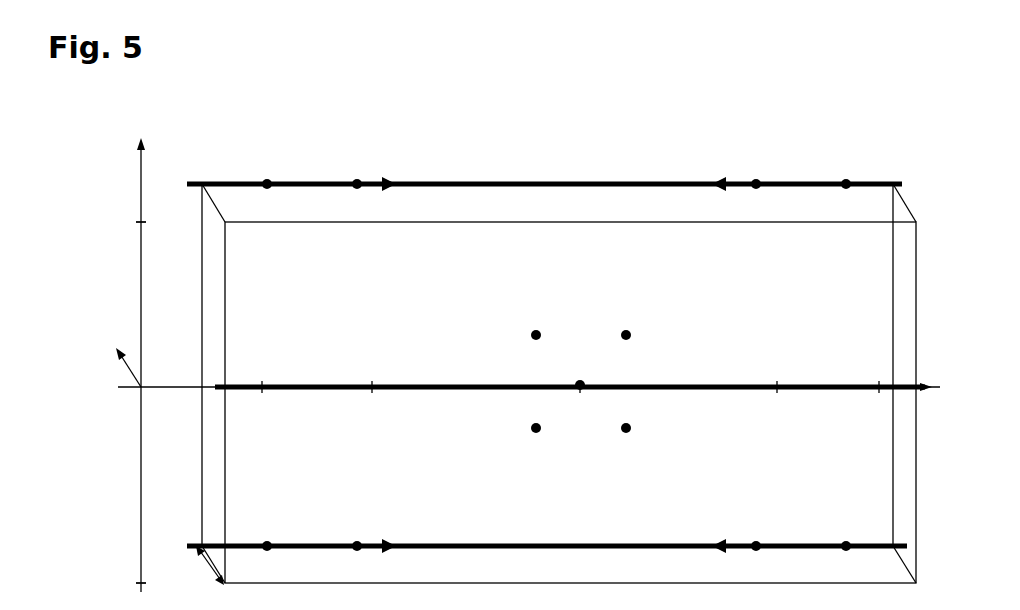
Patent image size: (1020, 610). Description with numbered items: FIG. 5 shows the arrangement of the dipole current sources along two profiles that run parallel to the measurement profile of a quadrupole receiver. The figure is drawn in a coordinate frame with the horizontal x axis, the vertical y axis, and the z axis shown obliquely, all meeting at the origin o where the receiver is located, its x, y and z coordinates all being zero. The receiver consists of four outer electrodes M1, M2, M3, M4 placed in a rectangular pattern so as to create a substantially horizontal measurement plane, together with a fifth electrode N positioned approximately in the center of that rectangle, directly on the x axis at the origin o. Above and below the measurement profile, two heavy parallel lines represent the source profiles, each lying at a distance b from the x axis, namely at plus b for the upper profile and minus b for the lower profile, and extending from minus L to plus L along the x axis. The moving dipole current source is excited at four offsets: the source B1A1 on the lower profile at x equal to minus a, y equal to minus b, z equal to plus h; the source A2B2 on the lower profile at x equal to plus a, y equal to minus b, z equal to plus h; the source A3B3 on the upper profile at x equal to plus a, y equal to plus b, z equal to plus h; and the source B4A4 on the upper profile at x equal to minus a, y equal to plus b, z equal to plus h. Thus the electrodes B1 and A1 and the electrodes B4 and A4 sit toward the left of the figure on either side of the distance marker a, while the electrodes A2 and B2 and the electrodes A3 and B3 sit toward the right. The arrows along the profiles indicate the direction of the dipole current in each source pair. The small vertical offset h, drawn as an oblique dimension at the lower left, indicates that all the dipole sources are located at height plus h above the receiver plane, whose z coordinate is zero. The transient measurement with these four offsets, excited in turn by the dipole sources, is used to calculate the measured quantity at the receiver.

The electrode A1 of dipole source B1A1 A1 is at (355, 557).
The electrode A2 of dipole source A2B2 A2 is at (758, 557).
The electrode A3 of dipole source A3B3 A3 is at (758, 195).
The electrode A4 of dipole source B4A4 A4 is at (355, 195).
The electrode B1 of dipole source B1A1 B1 is at (265, 557).
The electrode B2 of dipole source A2B2 B2 is at (852, 557).
The electrode B3 of dipole source A3B3 B3 is at (852, 195).
The electrode B4 of dipole source B4A4 B4 is at (265, 195).
The outer electrode M1 is at (545, 438).
The outer electrode M2 is at (635, 438).
The outer electrode M3 is at (633, 325).
The outer electrode M4 is at (542, 325).
The fifth electrode N is at (584, 375).
The origin o is at (580, 393).
The x axis x is at (529, 378).
The y axis y is at (133, 365).
The z axis z is at (128, 358).
The profile half-length L is at (564, 401).
The source x-offset a is at (568, 396).
The profile y-offset b is at (124, 404).
The source height h is at (205, 565).